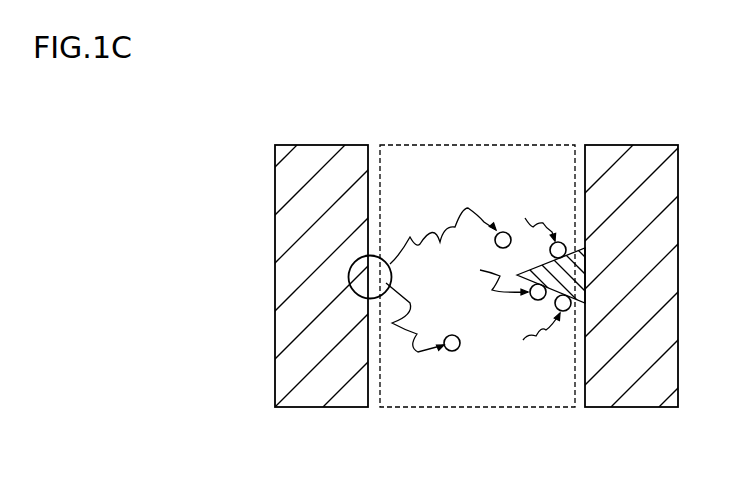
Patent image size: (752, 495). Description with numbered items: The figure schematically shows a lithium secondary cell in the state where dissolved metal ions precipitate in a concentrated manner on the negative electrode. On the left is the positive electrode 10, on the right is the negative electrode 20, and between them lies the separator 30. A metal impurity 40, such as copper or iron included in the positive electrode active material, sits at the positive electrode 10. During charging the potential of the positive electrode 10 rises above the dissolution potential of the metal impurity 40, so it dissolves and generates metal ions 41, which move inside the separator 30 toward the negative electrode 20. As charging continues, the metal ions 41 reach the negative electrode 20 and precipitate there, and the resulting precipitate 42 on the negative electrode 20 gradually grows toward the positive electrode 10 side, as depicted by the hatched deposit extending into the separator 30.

The positive electrode 10 is at (320, 145).
The negative electrode 20 is at (630, 145).
The separator 30 is at (481, 145).
The metal impurity 40 is at (349, 272).
The metal ions 41 is at (503, 231).
The precipitate 42 is at (570, 315).